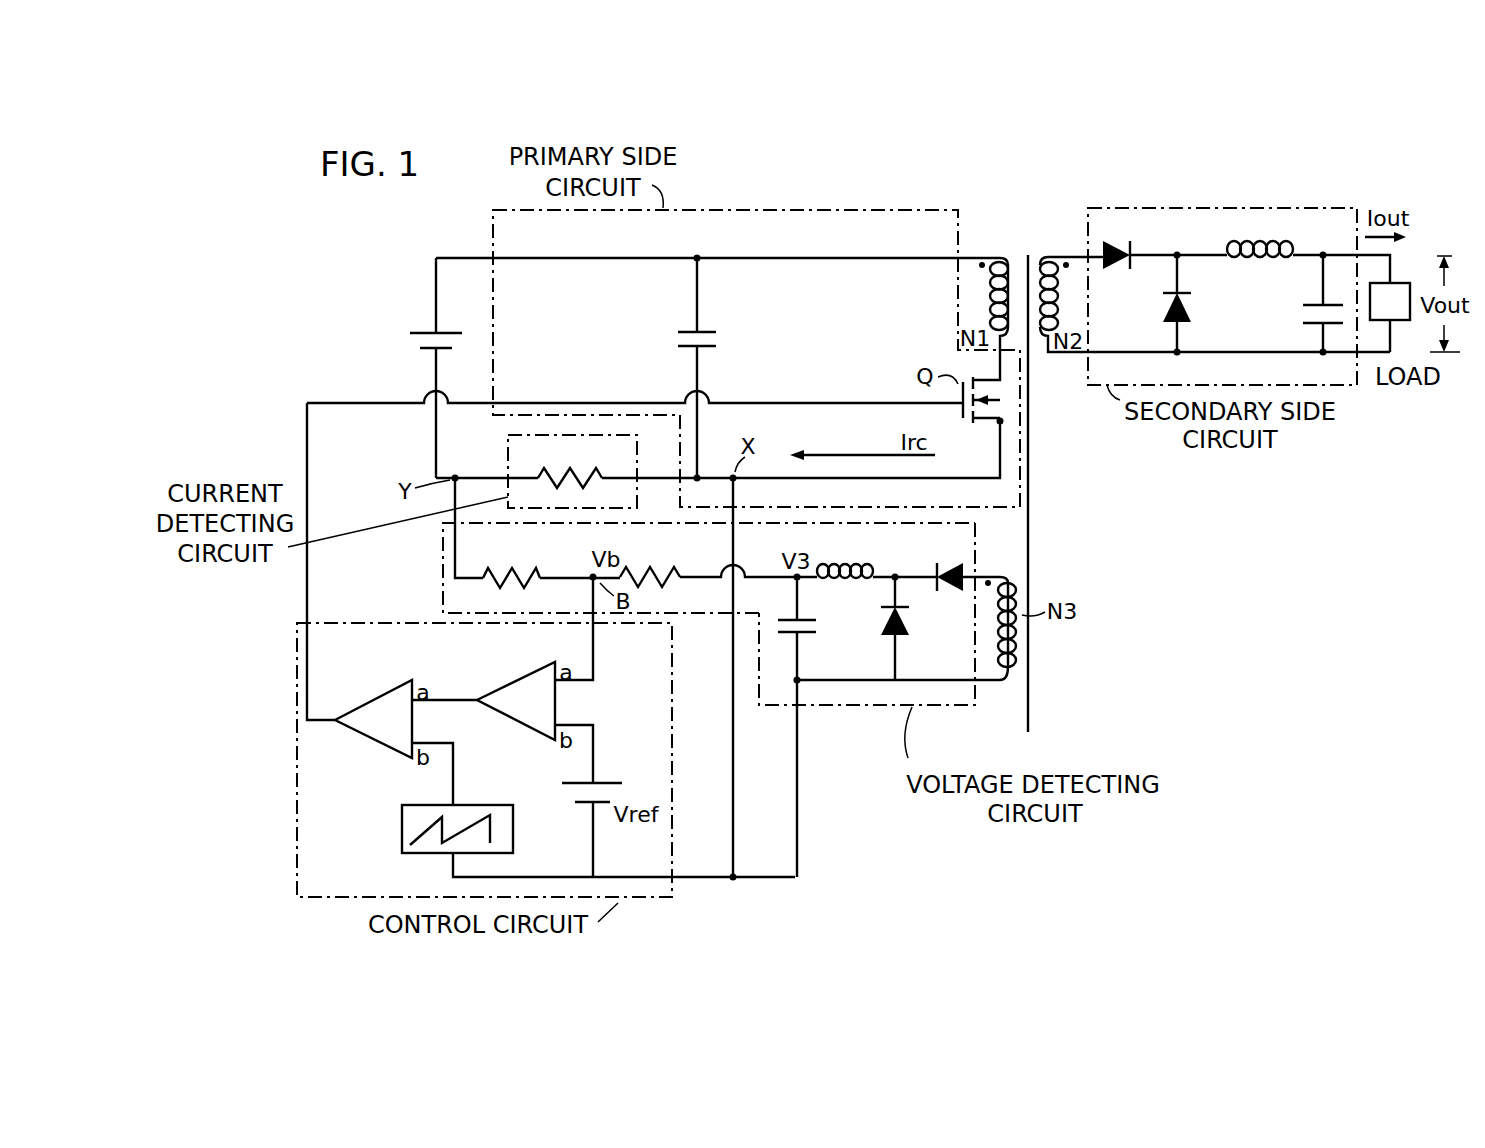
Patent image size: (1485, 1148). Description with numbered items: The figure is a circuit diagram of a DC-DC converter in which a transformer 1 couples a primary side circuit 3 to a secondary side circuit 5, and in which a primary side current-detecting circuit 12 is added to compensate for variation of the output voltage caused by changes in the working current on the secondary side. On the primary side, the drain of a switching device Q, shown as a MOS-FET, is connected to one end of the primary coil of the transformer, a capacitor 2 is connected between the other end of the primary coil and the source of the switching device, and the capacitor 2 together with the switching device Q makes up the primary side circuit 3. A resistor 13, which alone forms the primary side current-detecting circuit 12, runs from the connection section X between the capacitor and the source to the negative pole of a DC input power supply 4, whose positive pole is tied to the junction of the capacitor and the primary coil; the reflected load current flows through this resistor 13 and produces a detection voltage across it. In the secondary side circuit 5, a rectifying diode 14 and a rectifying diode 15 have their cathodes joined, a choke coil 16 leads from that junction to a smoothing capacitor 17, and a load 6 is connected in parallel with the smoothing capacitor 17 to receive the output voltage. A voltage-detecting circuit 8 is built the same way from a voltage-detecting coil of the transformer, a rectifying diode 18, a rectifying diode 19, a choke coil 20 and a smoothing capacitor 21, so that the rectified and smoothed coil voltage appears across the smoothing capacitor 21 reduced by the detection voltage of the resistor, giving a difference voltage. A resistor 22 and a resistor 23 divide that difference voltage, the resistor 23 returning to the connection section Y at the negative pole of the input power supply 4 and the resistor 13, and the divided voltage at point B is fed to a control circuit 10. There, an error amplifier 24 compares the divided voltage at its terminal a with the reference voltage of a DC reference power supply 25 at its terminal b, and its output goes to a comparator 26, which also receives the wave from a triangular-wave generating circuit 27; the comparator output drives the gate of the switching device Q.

The transformer 1 is at (1028, 256).
The capacitor 2 is at (709, 332).
The primary side circuit 3 is at (758, 210).
The input power supply 4 is at (420, 332).
The secondary side circuit 5 is at (1207, 208).
The load 6 is at (1400, 283).
The voltage-detecting circuit 8 is at (868, 710).
The control circuit 10 is at (415, 622).
The primary side current-detecting circuit 12 is at (506, 455).
The resistor 13 is at (578, 468).
The rectifying diode 14 is at (1120, 243).
The rectifying diode 15 is at (1165, 310).
The choke coil 16 is at (1267, 248).
The smoothing capacitor 17 is at (1305, 305).
The rectifying diode 18 is at (962, 590).
The rectifying diode 19 is at (882, 634).
The choke coil 20 is at (878, 567).
The smoothing capacitor 21 is at (782, 633).
The resistor 22 is at (653, 572).
The resistor 23 is at (518, 572).
The error amplifier 24 is at (495, 697).
The reference power supply 25 is at (605, 783).
The comparator 26 is at (378, 697).
The triangular-wave generating circuit 27 is at (478, 805).